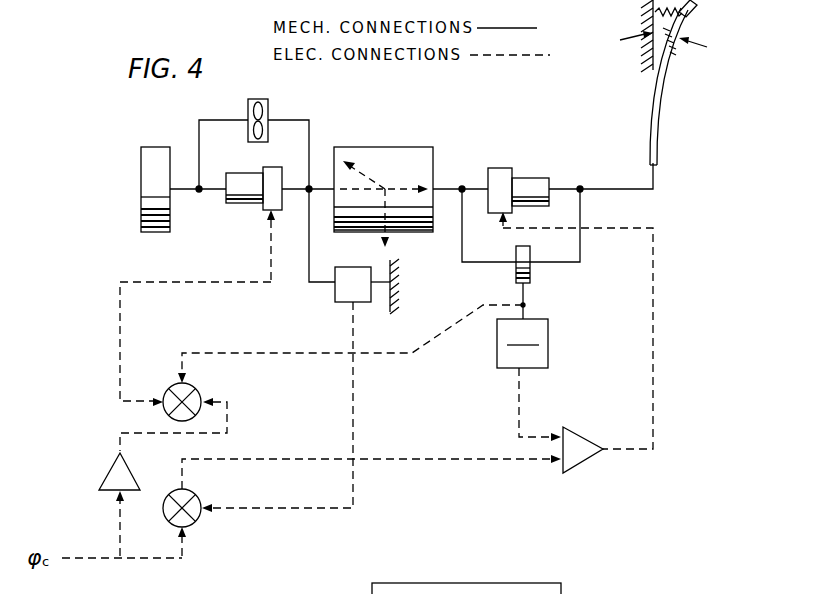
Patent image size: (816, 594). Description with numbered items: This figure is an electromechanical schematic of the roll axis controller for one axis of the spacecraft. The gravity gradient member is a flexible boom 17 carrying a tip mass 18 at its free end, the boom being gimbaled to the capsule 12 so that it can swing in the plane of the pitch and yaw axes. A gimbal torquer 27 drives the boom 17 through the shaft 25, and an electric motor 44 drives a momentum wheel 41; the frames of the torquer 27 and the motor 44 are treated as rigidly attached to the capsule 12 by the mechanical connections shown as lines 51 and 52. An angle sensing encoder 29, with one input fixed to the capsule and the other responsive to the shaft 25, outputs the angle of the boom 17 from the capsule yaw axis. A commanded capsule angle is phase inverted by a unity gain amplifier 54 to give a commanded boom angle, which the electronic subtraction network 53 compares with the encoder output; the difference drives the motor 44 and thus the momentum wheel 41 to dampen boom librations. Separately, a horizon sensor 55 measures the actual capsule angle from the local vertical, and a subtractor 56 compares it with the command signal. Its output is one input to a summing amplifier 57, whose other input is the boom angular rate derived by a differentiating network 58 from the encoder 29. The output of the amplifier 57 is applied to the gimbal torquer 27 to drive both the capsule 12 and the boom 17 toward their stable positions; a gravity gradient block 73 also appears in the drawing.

The capsule 12 is at (397, 147).
The flexible boom 17 is at (658, 113).
The tip mass 18 is at (695, 8).
The shaft 25 is at (609, 188).
The gimbal torquer 27 is at (505, 171).
The angle sensing encoder 29 is at (516, 272).
The momentum wheel 41 is at (141, 218).
The electric motor 44 is at (267, 205).
The mechanical connection 51 is at (321, 195).
The mechanical connection 52 is at (449, 200).
The electronic subtraction network 53 is at (195, 390).
The unity gain amplifier 54 is at (112, 470).
The horizon sensor 55 is at (333, 295).
The subtractor 56 is at (200, 498).
The summing amplifier 57 is at (575, 460).
The differentiating network 58 is at (497, 360).
The gravity gradient computer 73 is at (474, 583).